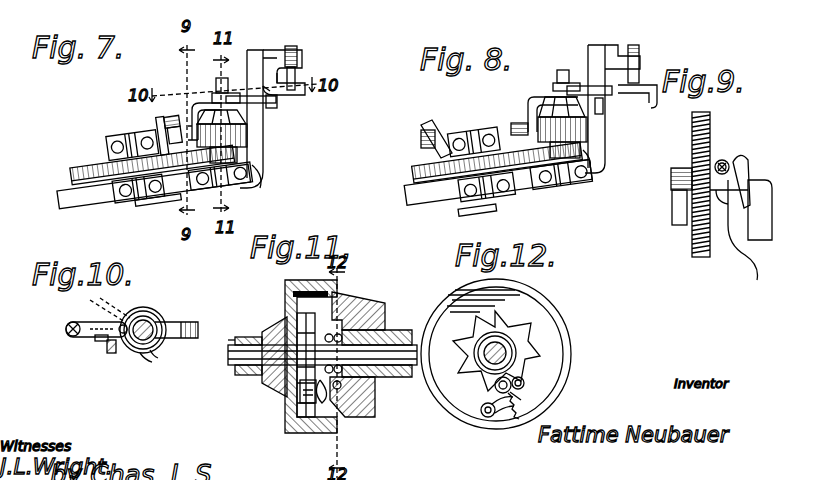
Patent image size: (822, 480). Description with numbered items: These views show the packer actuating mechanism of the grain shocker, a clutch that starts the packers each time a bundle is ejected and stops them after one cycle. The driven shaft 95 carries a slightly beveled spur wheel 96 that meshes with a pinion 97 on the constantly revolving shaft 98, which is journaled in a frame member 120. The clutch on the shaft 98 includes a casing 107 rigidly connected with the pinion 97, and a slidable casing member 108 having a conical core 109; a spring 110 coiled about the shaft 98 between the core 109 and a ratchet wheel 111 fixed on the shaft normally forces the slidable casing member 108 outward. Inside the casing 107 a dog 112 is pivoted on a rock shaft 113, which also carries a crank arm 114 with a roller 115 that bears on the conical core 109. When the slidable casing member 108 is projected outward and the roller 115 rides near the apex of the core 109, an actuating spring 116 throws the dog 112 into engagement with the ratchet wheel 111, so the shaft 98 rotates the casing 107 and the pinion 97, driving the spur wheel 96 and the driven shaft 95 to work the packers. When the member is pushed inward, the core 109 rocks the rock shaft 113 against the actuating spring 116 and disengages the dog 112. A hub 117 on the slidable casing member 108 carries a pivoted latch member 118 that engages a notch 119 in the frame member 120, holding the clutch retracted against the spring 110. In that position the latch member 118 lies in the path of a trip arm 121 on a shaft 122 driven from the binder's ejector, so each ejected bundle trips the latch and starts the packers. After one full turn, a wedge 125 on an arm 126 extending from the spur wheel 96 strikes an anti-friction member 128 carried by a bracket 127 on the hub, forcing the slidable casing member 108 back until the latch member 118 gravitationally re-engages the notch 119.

In FIG. 7, the driven shaft 95 is at (132, 145).
In FIG. 7, the spur wheel 96 is at (152, 165).
In FIG. 8, the spur wheel 96 is at (497, 163).
In FIG. 9, the spur wheel 96 is at (701, 184).
In FIG. 7, the pinion 97 is at (256, 176).
In FIG. 8, the pinion 97 is at (586, 159).
In FIG. 11, the pinion 97 is at (261, 357).
In FIG. 7, the shaft 98 is at (226, 90).
In FIG. 8, the shaft 98 is at (566, 80).
In FIG. 10, the shaft 98 is at (143, 330).
In FIG. 11, the shaft 98 is at (322, 355).
In FIG. 12, the shaft 98 is at (496, 354).
In FIG. 7, the casing 107 is at (223, 155).
In FIG. 8, the casing 107 is at (565, 150).
In FIG. 10, the casing 107 is at (143, 330).
In FIG. 11, the casing 107 is at (311, 356).
In FIG. 7, the slidable casing member 108 is at (222, 128).
In FIG. 8, the slidable casing member 108 is at (562, 119).
In FIG. 11, the slidable casing member 108 is at (358, 311).
In FIG. 11, the conical core 109 is at (352, 397).
In FIG. 12, the conical core 109 is at (496, 351).
In FIG. 11, the spring 110 is at (333, 353).
In FIG. 12, the spring 110 is at (495, 353).
In FIG. 11, the ratchet wheel 111 is at (306, 365).
In FIG. 12, the ratchet wheel 111 is at (495, 353).
In FIG. 11, the dog 112 is at (308, 391).
In FIG. 12, the dog 112 is at (517, 388).
In FIG. 12, the rock shaft 113 is at (488, 410).
In FIG. 11, the crank arm 114 is at (321, 391).
In FIG. 12, the crank arm 114 is at (503, 385).
In FIG. 11, the roller 115 is at (337, 385).
In FIG. 12, the roller 115 is at (503, 405).
In FIG. 12, the actuating spring 116 is at (513, 406).
In FIG. 7, the hub 117 is at (251, 99).
In FIG. 8, the hub 117 is at (589, 90).
In FIG. 10, the hub 117 is at (123, 321).
In FIG. 11, the hub 117 is at (377, 353).
In FIG. 7, the latch member 118 is at (284, 72).
In FIG. 8, the latch member 118 is at (622, 57).
In FIG. 7, the notch 119 is at (270, 74).
In FIG. 8, the notch 119 is at (599, 106).
In FIG. 7, the frame member 120 is at (251, 119).
In FIG. 8, the frame member 120 is at (595, 109).
In FIG. 10, the frame member 120 is at (105, 344).
In FIG. 7, the trip arm 121 is at (271, 101).
In FIG. 8, the trip arm 121 is at (637, 96).
In FIG. 10, the trip arm 121 is at (96, 329).
In FIG. 7, the shaft 122 is at (291, 68).
In FIG. 8, the shaft 122 is at (633, 64).
In FIG. 10, the shaft 122 is at (73, 329).
In FIG. 7, the wedge 125 is at (162, 135).
In FIG. 8, the wedge 125 is at (436, 139).
In FIG. 9, the wedge 125 is at (741, 181).
In FIG. 7, the arm 126 is at (173, 129).
In FIG. 8, the arm 126 is at (428, 139).
In FIG. 9, the arm 126 is at (760, 210).
In FIG. 7, the bracket 127 is at (193, 133).
In FIG. 8, the bracket 127 is at (519, 129).
In FIG. 9, the bracket 127 is at (722, 167).
In FIG. 10, the bracket 127 is at (149, 356).
In FIG. 7, the anti-friction member 128 is at (207, 121).
In FIG. 8, the anti-friction member 128 is at (553, 114).
In FIG. 9, the anti-friction member 128 is at (743, 230).
In FIG. 10, the anti-friction member 128 is at (176, 330).